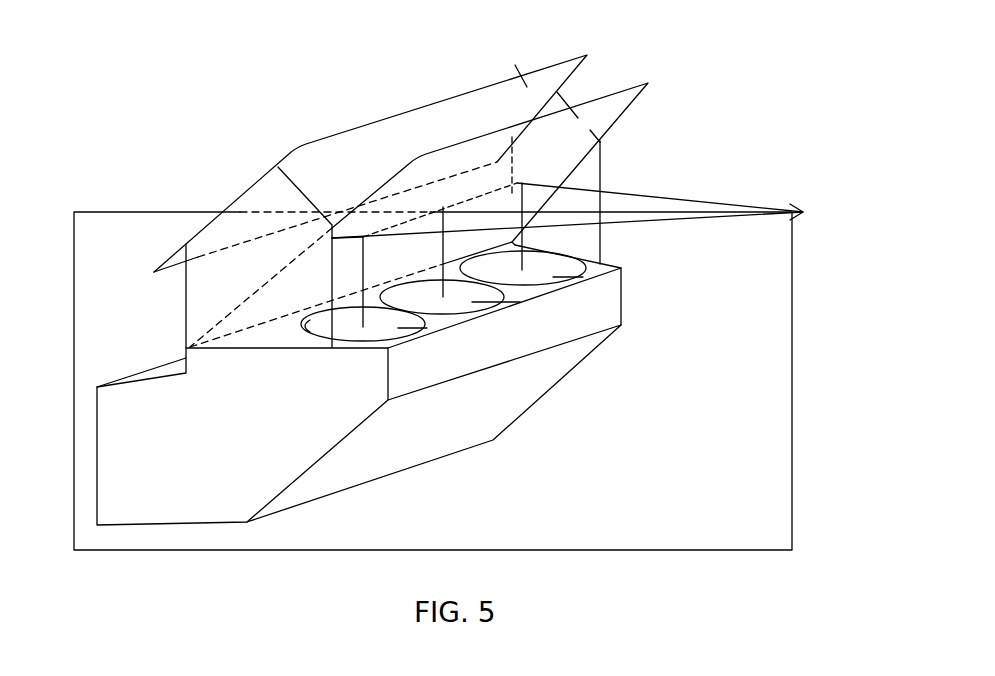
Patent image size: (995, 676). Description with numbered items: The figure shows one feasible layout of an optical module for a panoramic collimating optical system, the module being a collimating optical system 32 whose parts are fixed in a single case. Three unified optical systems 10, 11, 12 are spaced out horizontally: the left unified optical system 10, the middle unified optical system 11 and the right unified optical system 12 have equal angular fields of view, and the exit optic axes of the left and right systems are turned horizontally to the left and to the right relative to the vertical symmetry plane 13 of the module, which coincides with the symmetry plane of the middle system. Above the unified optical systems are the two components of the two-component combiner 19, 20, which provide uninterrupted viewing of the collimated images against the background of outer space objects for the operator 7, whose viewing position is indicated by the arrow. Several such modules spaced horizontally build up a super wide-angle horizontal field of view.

The vertical symmetry plane 13 is at (145, 230).
The two-component combiner 20 is at (527, 87).
The two-component combiner 19 is at (607, 110).
The operator 7 is at (782, 210).
The right unified optical system 12 is at (593, 267).
The middle unified optical system 11 is at (505, 300).
The left unified optical system 10 is at (415, 325).
The collimating optical system 32 is at (417, 433).